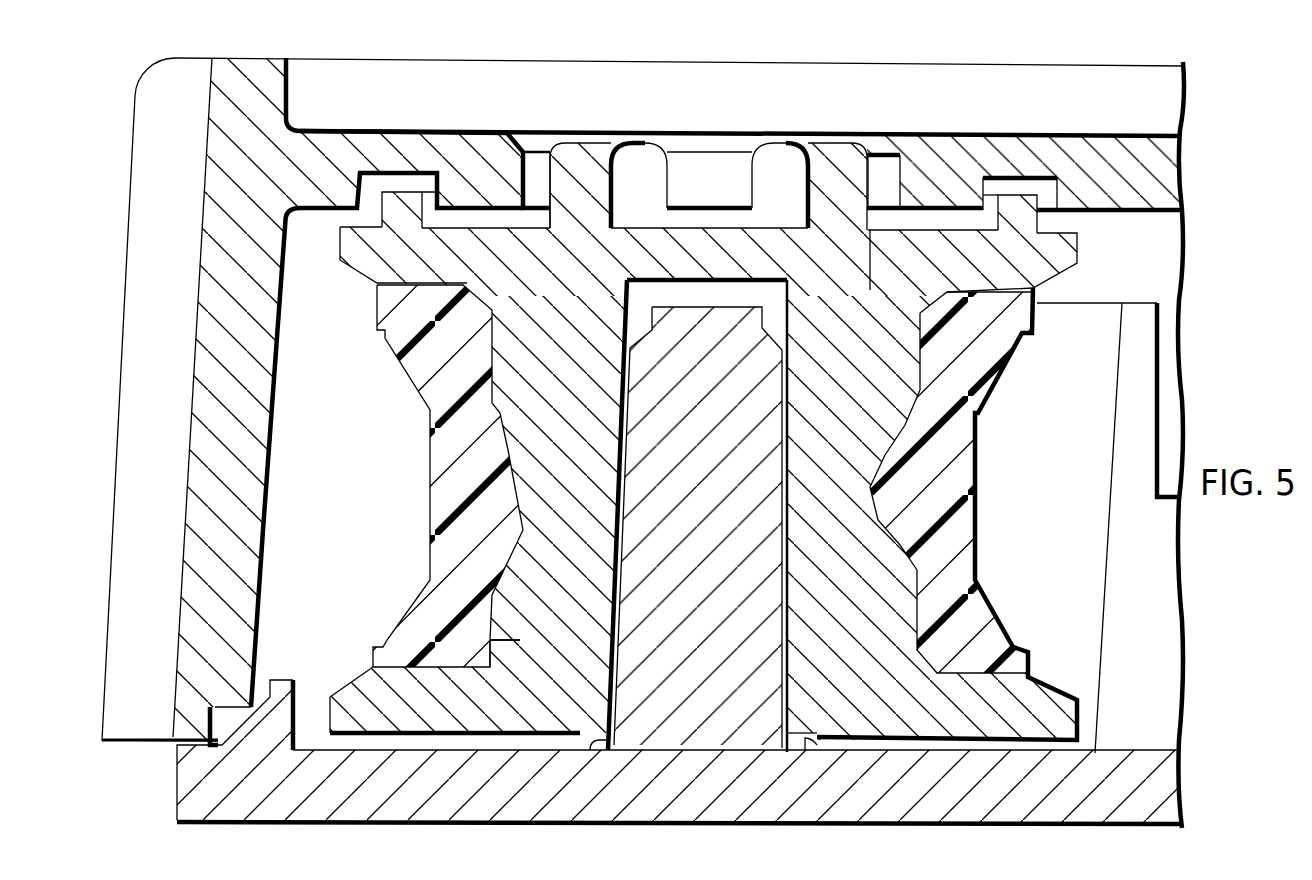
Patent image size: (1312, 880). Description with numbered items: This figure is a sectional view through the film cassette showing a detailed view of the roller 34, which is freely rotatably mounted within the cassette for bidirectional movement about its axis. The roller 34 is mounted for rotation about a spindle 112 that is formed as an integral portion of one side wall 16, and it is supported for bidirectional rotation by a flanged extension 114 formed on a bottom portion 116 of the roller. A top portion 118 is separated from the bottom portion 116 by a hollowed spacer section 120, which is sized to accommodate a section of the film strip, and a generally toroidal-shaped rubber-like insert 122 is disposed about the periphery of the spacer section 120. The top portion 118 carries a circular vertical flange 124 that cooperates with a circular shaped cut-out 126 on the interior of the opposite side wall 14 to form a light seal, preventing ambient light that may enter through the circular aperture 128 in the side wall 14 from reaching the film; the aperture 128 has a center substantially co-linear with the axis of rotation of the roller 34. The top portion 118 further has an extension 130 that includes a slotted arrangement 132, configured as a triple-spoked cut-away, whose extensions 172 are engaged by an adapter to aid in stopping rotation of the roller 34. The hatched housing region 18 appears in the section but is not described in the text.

The side wall 14 is at (305, 152).
The side wall 16 is at (588, 800).
The housing wall 18 is at (208, 598).
The roller 34 is at (1020, 557).
The spindle 112 is at (680, 600).
The flanged extension 114 is at (605, 745).
The bottom portion 116 is at (415, 725).
The top portion 118 is at (366, 265).
The hollowed spacer section 120 is at (848, 508).
The rubber-like insert 122 is at (445, 485).
The circular vertical flange 124 is at (380, 213).
The circular shaped cut-out 126 is at (372, 178).
The aperture 128 is at (538, 160).
The extension 130 is at (752, 122).
The slotted arrangement 132 is at (690, 178).
The extensions 172 is at (578, 162).